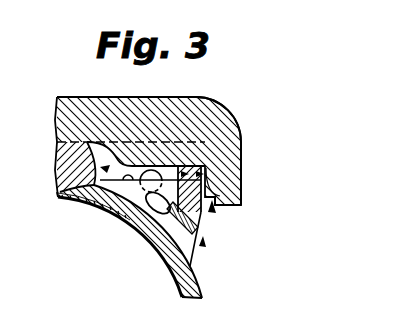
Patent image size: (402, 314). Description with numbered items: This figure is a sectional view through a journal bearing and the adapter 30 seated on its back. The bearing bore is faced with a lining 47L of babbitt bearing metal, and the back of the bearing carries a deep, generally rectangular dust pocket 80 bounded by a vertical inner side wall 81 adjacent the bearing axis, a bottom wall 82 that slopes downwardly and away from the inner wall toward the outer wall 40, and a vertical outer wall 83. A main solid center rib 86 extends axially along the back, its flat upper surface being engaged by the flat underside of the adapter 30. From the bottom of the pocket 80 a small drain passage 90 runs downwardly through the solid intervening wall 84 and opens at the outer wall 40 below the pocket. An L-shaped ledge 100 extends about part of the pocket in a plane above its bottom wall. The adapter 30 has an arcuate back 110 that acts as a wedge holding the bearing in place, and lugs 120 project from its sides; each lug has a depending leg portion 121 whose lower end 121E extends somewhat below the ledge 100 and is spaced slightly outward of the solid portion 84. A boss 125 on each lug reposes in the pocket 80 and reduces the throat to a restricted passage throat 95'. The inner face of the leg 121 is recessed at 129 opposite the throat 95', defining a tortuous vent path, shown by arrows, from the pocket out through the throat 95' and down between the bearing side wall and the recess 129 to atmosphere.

The adapter 30 is at (241, 107).
The arcuate back 110 is at (181, 96).
The lug 120 is at (227, 140).
The main solid center rib 86 is at (73, 143).
The boss 125 is at (128, 146).
The vertical inner side wall 81 is at (58, 167).
The passage throat of reduced area 95' is at (259, 171).
The solid intervening wall 84 is at (206, 171).
The depending leg portion 121 is at (243, 188).
The bottom edge 121E is at (238, 205).
The recess 129 is at (220, 208).
The outer wall 40 is at (205, 238).
The drain passage 90 is at (196, 248).
The vertical outer wall 83 is at (150, 214).
The bottom wall 82 is at (128, 221).
The L-shaped ledge 100 is at (104, 209).
The dust pocket 80 is at (86, 211).
The lining 47L is at (61, 200).